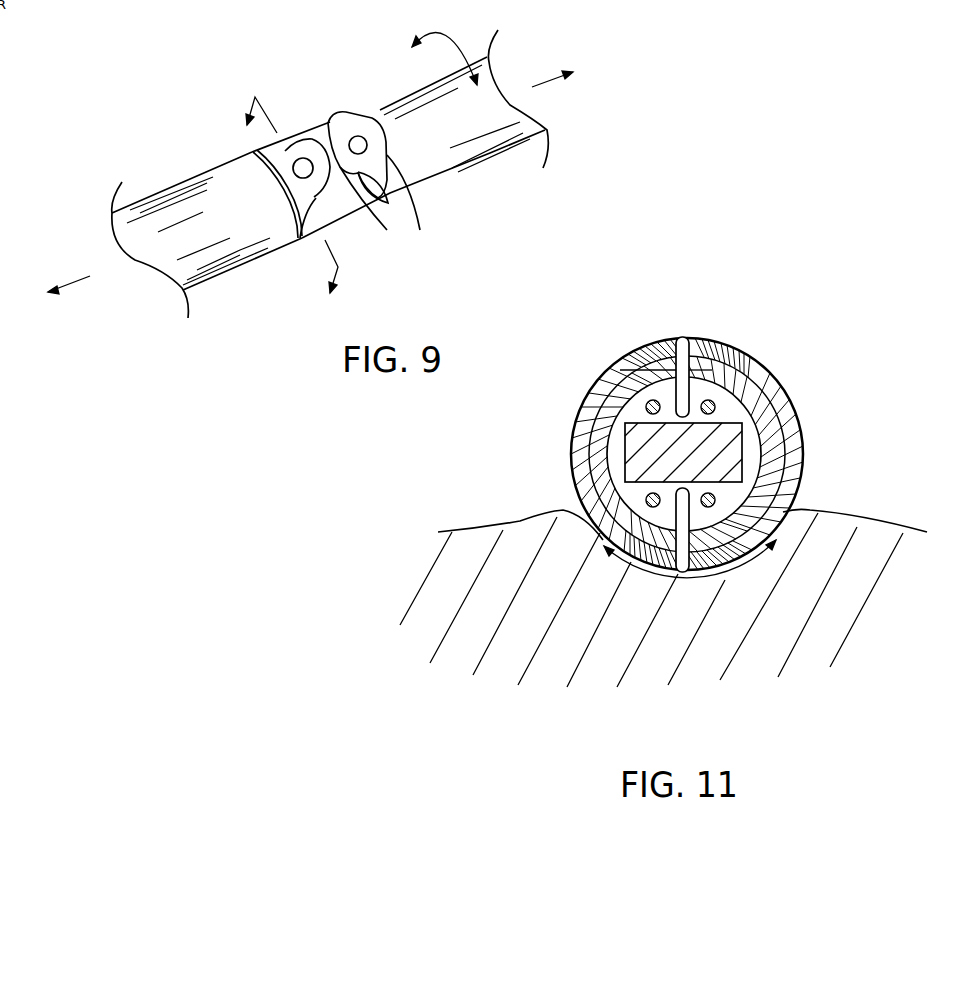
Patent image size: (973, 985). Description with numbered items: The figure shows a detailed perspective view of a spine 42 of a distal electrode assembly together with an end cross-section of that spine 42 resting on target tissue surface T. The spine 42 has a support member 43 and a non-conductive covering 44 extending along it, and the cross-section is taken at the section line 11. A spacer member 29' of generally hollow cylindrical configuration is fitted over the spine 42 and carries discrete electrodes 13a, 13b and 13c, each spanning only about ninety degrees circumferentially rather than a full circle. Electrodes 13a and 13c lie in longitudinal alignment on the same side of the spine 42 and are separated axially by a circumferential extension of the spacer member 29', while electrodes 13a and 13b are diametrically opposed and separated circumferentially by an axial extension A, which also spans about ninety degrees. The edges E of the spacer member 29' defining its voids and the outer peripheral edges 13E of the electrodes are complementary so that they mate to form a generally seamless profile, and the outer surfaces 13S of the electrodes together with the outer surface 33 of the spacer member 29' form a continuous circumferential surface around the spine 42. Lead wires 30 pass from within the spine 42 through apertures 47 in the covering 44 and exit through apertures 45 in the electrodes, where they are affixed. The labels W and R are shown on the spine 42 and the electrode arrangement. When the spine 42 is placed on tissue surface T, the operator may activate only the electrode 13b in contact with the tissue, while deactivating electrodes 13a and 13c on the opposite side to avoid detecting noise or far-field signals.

In FIG. 9, the spine 42 is at (168, 195).
In FIG. 11, the spine 42 is at (800, 385).
In FIG. 9, the section line 11 is at (279, 216).
In FIG. 9, the discrete electrode 13a is at (293, 153).
In FIG. 11, the discrete electrode 13a is at (617, 370).
In FIG. 9, the discrete electrode 13c is at (340, 127).
In FIG. 11, the discrete electrode 13b is at (630, 557).
In FIG. 11, the outer surface of electrode 13S is at (723, 343).
In FIG. 9, the outer peripheral edge of electrode 13E is at (304, 240).
In FIG. 9, the lead wire 30 is at (361, 142).
In FIG. 11, the lead wire 30 is at (684, 338).
In FIG. 9, the aperture in electrode 45 is at (362, 144).
In FIG. 11, the aperture in electrode 45 is at (667, 358).
In FIG. 9, the spacer member 29' is at (361, 262).
In FIG. 11, the outer surface of spacer member 33 is at (572, 433).
In FIG. 11, the non-conductive covering 44 is at (590, 450).
In FIG. 11, the support member 43 is at (742, 483).
In FIG. 11, the aperture in covering 47 is at (612, 372).
In FIG. 9, the edge E is at (363, 215).
In FIG. 9, the width W is at (376, 168).
In FIG. 11, the width W is at (700, 338).
In FIG. 9, the rotation direction R is at (445, 52).
In FIG. 11, the axial extension A is at (797, 453).
In FIG. 11, the target tissue surface T is at (898, 530).